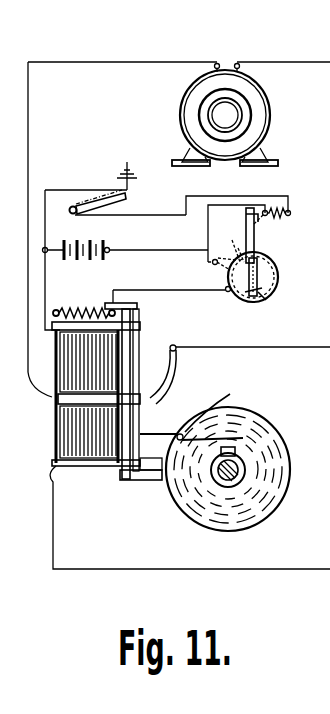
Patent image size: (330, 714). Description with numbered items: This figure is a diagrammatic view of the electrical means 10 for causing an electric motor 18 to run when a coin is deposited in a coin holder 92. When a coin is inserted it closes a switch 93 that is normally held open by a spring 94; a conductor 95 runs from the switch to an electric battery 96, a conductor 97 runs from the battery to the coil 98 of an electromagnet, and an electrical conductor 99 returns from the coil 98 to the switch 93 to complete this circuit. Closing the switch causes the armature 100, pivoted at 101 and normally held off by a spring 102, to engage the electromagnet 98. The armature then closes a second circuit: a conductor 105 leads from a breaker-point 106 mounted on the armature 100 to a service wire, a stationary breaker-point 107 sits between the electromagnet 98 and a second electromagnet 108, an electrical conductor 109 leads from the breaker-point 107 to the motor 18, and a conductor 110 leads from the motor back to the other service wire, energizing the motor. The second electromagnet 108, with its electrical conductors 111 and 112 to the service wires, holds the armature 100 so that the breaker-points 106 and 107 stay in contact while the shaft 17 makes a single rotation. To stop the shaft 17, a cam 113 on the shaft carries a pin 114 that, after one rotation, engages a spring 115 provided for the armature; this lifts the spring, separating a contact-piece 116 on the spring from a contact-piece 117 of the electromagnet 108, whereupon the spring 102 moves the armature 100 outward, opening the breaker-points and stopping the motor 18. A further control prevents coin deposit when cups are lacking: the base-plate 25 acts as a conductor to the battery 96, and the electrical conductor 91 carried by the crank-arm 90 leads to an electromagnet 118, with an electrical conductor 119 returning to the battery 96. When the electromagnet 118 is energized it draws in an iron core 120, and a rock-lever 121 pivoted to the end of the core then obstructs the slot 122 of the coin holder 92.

The control system 10 is at (322, 151).
The shaft 17 is at (232, 486).
The electric motor 18 is at (270, 106).
The base-plate 25 is at (78, 190).
The crank-arm 90 is at (118, 206).
The electrical conductor 91 is at (186, 200).
The coin holder 92 is at (279, 278).
The switch 93 is at (216, 266).
The spring 94 is at (232, 250).
The conductor 95 is at (140, 252).
The electric battery 96 is at (107, 242).
The conductor 97 is at (46, 292).
The coil 98 is at (62, 370).
The electrical conductor 99 is at (188, 292).
The armature 100 is at (131, 352).
The pivot 101 is at (136, 330).
The spring 102 is at (82, 309).
The conductor 105 is at (276, 349).
The breaker-point 106 is at (135, 392).
The stationary breaker-point 107 is at (58, 413).
The second electromagnet 108 is at (72, 440).
The electrical conductor 109 is at (134, 62).
The electrical conductor 110 is at (282, 61).
The electrical conductor 111 is at (175, 374).
The electrical conductor 112 is at (176, 571).
The cam 113 is at (290, 470).
The pin 114 is at (228, 436).
The spring 115 is at (211, 406).
The contact-piece 116 is at (164, 417).
The contact-piece 117 is at (164, 481).
The electromagnet 118 is at (290, 214).
The electrical conductor 119 is at (208, 232).
The iron core 120 is at (270, 238).
The rock-lever 121 is at (246, 224).
The slot 122 is at (268, 292).